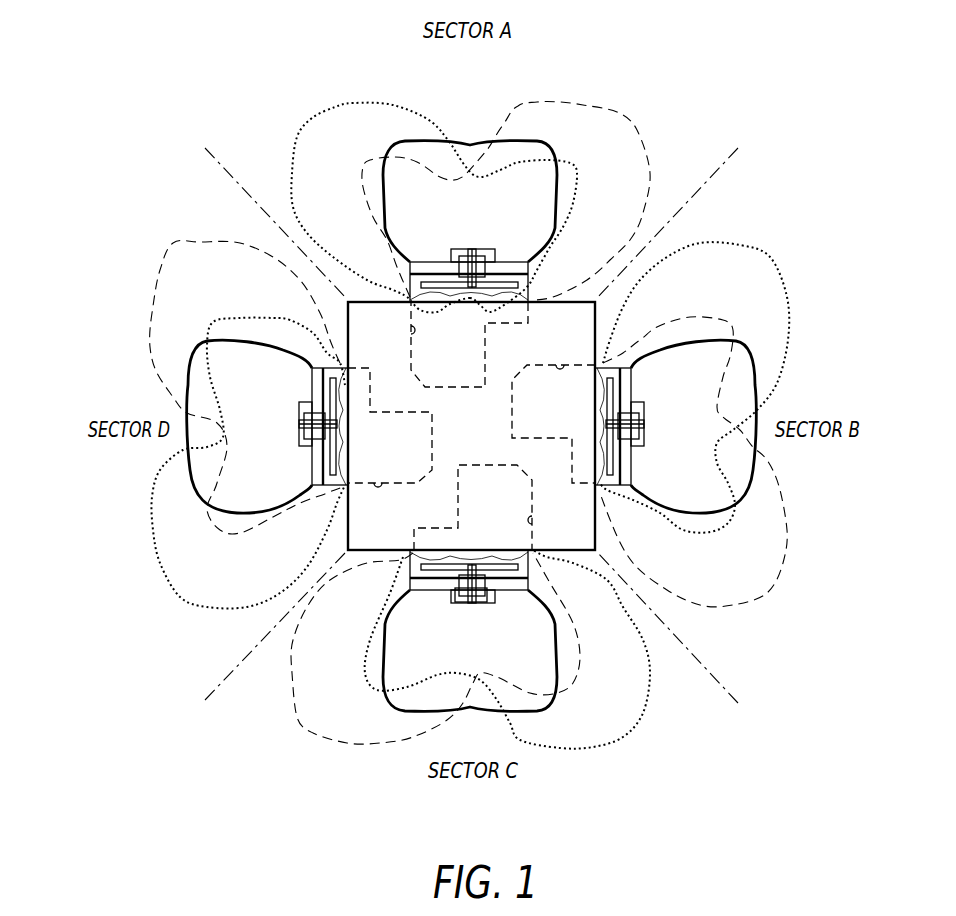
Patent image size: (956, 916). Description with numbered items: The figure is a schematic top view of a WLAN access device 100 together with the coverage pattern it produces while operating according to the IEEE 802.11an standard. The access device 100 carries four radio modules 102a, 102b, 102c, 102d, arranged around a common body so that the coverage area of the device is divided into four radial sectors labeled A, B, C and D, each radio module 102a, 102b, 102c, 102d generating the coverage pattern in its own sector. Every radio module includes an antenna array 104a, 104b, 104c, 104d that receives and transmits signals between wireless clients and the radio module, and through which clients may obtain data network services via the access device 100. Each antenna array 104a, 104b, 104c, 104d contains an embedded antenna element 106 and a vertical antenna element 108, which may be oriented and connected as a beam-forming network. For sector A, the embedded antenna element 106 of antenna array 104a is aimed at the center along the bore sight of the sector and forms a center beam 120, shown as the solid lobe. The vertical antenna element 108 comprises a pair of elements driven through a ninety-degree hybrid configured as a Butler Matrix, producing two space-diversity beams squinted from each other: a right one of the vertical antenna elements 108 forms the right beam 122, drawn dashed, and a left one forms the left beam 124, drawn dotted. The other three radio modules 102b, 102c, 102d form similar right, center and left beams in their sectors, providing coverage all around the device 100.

The WLAN access device 100 is at (578, 339).
The radio module 102a is at (467, 366).
The radio module 102b is at (568, 423).
The radio module 102c is at (513, 517).
The radio module 102d is at (413, 460).
The antenna array 104a is at (472, 242).
The antenna array 104b is at (658, 428).
The antenna array 104c is at (472, 616).
The antenna array 104d is at (290, 426).
The embedded antenna element 106 is at (458, 598).
The vertical antenna element 108 is at (335, 393).
The center beam 120 is at (471, 140).
The right beam 122 is at (584, 104).
The left beam 124 is at (312, 118).